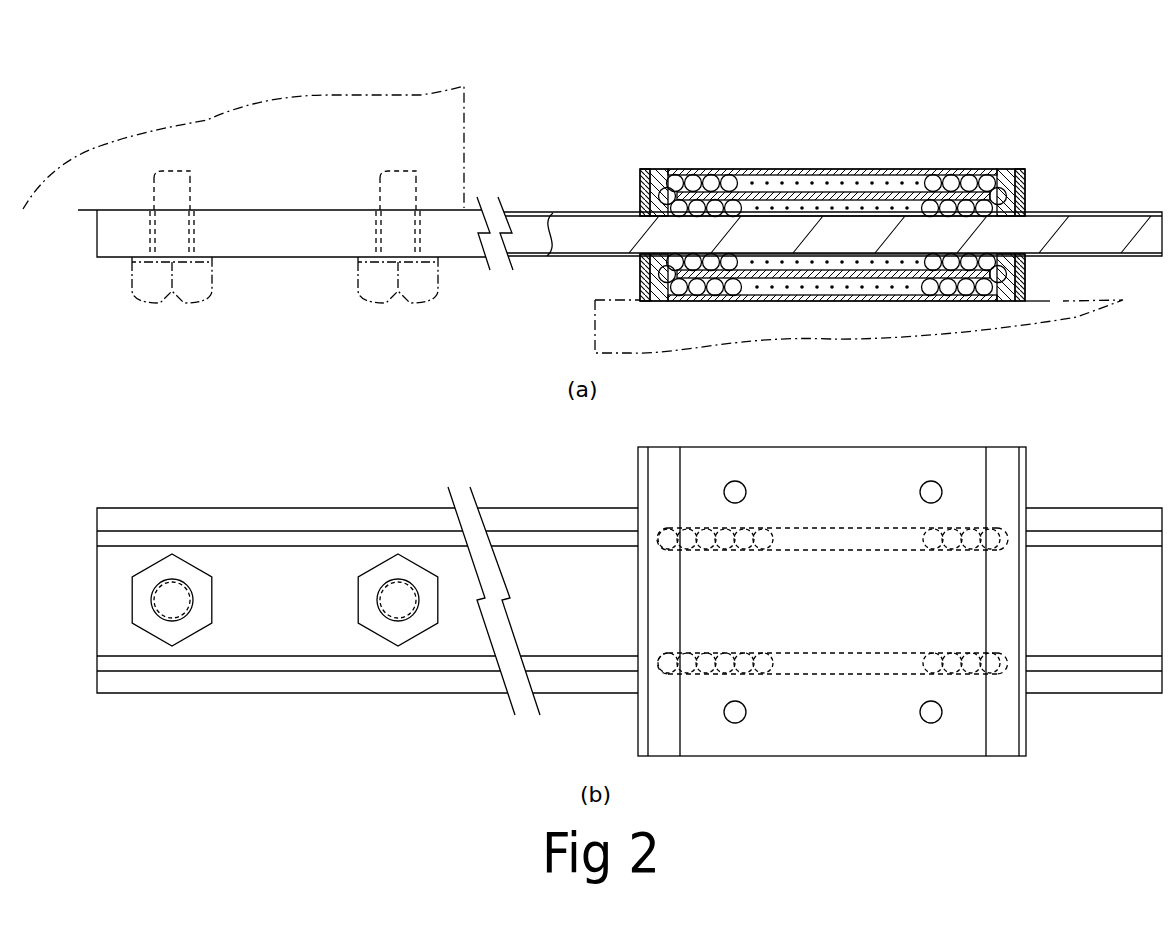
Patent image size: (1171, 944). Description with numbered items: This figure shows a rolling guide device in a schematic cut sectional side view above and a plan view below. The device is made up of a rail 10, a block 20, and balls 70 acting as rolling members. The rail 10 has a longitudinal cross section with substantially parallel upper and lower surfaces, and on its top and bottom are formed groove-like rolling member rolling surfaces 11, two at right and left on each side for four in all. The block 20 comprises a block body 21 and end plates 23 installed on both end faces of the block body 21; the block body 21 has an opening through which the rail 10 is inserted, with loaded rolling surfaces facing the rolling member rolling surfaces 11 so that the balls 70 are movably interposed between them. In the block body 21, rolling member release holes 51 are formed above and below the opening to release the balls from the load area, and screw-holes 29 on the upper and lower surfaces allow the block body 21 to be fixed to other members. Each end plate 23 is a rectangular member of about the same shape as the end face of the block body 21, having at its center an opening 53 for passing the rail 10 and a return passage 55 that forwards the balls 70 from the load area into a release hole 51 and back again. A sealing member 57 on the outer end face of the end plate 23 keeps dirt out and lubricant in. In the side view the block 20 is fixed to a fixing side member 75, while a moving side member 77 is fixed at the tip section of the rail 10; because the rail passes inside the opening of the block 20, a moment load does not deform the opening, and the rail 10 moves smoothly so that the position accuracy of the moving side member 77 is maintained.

The rail 10 is at (620, 415).
The rolling member rolling surface 11 is at (1098, 213).
The block 20 is at (819, 442).
The block body 21 is at (825, 169).
The end plate 23 is at (672, 169).
The screw-hole 29 is at (735, 481).
The rolling member release hole 51 is at (775, 178).
The opening 53 is at (648, 302).
The return passage 55 is at (655, 169).
The sealing member 57 is at (640, 190).
The ball 70 is at (715, 176).
The fixing side member 75 is at (595, 330).
The moving side member 77 is at (163, 147).